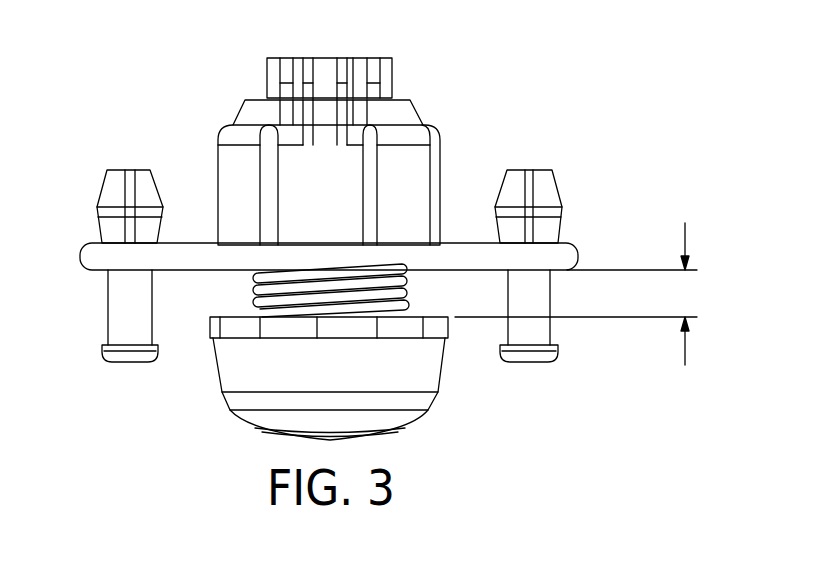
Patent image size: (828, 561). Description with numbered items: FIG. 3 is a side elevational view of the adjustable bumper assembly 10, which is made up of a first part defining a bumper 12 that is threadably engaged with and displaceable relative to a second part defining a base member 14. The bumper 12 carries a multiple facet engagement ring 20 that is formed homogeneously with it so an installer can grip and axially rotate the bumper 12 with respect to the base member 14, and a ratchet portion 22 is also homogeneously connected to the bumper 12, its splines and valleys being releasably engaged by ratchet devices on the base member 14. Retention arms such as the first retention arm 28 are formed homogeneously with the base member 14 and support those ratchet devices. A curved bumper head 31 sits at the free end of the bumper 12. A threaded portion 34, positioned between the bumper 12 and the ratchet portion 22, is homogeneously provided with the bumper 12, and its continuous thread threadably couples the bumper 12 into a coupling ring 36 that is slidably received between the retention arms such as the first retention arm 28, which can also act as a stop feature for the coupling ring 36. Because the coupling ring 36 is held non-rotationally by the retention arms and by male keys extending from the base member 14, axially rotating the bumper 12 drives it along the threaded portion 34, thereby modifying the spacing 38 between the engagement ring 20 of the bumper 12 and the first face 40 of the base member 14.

The adjustable bumper assembly 10 is at (597, 133).
The bumper 12 is at (423, 380).
The base member 14 is at (565, 258).
The engagement ring 20 is at (440, 328).
The ratchet portion 22 is at (393, 78).
The first retention arm 28 is at (418, 182).
The bumper head 31 is at (237, 398).
The threaded portion 34 is at (257, 305).
The coupling ring 36 is at (297, 180).
The spacing 38 is at (576, 294).
The first face 40 is at (190, 272).